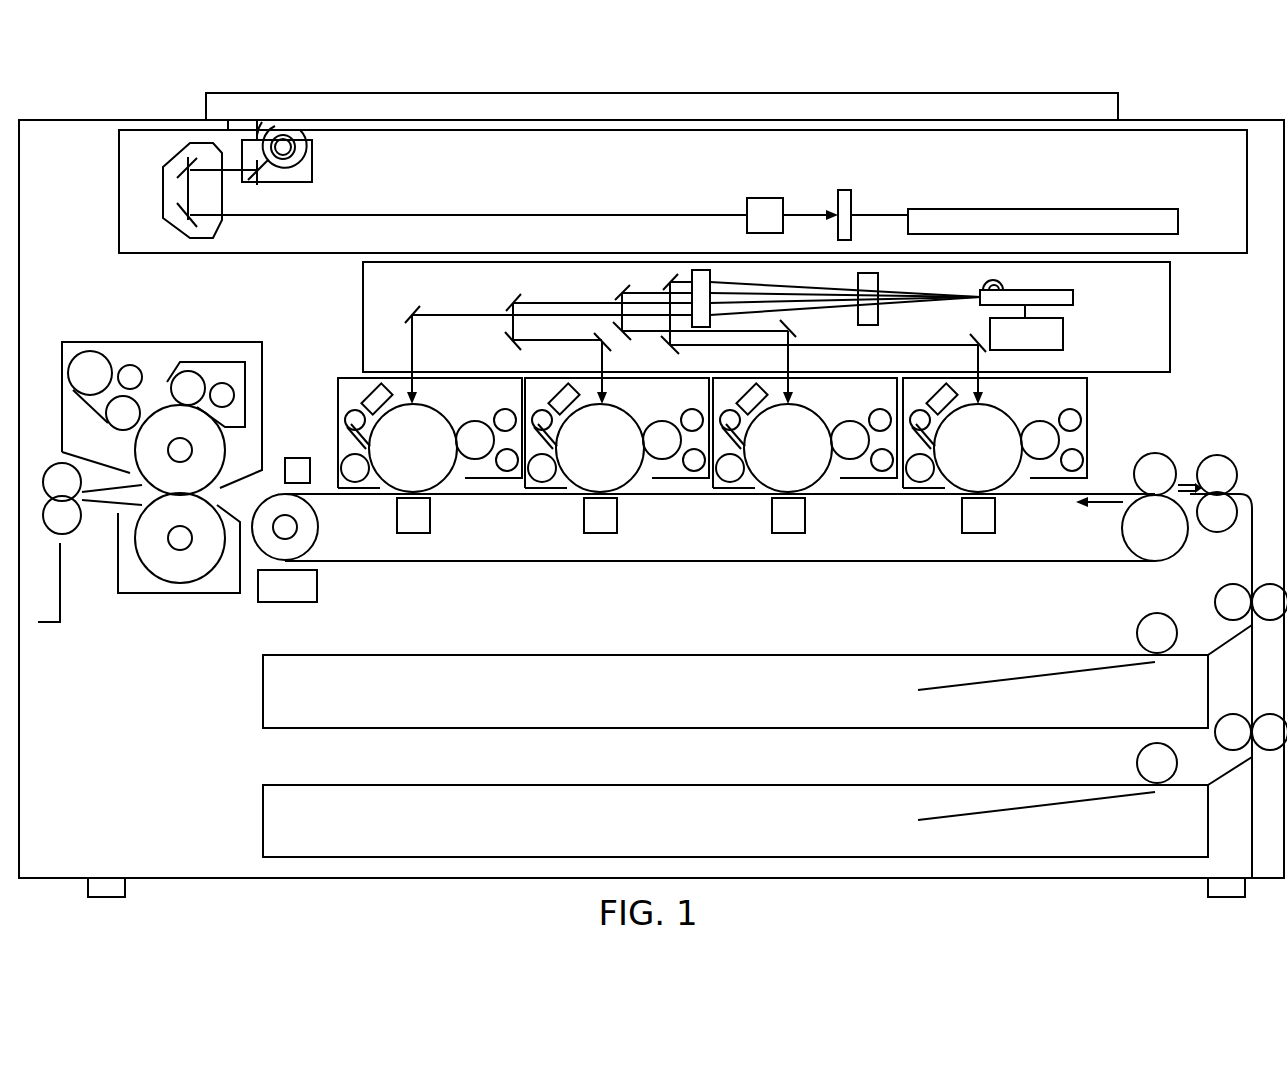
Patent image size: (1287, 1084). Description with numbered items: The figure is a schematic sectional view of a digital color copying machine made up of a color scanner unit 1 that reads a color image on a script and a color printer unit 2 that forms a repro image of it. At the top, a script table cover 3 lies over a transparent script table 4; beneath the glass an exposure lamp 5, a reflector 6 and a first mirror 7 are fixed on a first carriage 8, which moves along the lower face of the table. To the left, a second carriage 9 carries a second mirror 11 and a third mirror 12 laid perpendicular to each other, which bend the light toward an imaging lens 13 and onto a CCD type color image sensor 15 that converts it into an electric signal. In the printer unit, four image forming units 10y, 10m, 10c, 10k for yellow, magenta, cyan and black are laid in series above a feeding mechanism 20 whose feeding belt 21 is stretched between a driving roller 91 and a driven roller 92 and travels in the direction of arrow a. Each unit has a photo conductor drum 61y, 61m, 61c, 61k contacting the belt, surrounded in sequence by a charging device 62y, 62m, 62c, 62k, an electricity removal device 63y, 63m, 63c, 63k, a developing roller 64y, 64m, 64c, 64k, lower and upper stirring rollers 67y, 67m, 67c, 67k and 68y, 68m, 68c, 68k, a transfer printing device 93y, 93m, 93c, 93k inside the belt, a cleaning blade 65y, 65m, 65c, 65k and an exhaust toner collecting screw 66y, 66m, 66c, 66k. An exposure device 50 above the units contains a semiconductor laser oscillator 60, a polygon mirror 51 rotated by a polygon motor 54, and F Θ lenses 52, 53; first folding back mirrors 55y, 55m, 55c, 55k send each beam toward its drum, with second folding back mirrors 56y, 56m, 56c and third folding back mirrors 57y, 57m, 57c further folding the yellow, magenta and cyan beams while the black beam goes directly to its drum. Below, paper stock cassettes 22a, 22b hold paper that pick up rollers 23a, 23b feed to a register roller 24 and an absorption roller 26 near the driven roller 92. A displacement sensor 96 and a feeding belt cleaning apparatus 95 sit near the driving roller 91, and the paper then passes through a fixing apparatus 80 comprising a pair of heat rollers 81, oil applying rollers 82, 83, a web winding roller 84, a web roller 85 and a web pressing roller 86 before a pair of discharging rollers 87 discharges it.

The color scanner unit 1 is at (1083, 160).
The color printer unit 2 is at (352, 325).
The script table cover 3 is at (592, 108).
The script table 4 is at (550, 130).
The exposure lamp 5 is at (300, 142).
The reflector 6 is at (298, 168).
The first mirror 7 is at (262, 182).
The first carriage 8 is at (313, 160).
The second carriage 9 is at (222, 222).
The second mirror 11 is at (180, 165).
The third mirror 12 is at (177, 222).
The imaging lens 13 is at (770, 196).
The CCD type color image sensor 15 is at (845, 190).
The image forming unit 10k is at (458, 476).
The image forming unit 10c is at (645, 476).
The image forming unit 10m is at (833, 476).
The image forming unit 10y is at (1023, 476).
The feeding mechanism 20 is at (1095, 562).
The feeding belt 21 is at (1113, 492).
The paper stock cassette 22a is at (263, 690).
The paper stock cassette 22b is at (263, 815).
The pick up roller 23a is at (1140, 633).
The pick up roller 23b is at (1140, 763).
The register roller 24 is at (1215, 456).
The absorption roller 26 is at (1155, 455).
The exposure device 50 is at (1172, 314).
The polygon mirror 51 is at (1075, 297).
The F Θ lens 52 is at (880, 278).
The F Θ lens 53 is at (712, 272).
The polygon motor 54 is at (1065, 335).
The first folding back mirror 55k is at (410, 312).
The first folding back mirror 55c is at (508, 300).
The first folding back mirror 55m is at (616, 292).
The first folding back mirror 55y is at (666, 282).
The second folding back mirror 56c is at (507, 338).
The second folding back mirror 56m is at (615, 327).
The second folding back mirror 56y is at (666, 346).
The third folding back mirror 57c is at (595, 340).
The third folding back mirror 57m is at (795, 328).
The third folding back mirror 57y is at (975, 340).
The semiconductor laser oscillator 60 is at (1005, 283).
The photo conductor drum 61k is at (449, 415).
The photo conductor drum 61c is at (636, 415).
The photo conductor drum 61m is at (824, 415).
The photo conductor drum 61y is at (1014, 415).
The charging device 62k is at (365, 390).
The charging device 62c is at (570, 385).
The charging device 62m is at (758, 385).
The charging device 62y is at (948, 385).
The electricity removal device 63k is at (345, 418).
The electricity removal device 63c is at (542, 408).
The electricity removal device 63m is at (730, 408).
The electricity removal device 63y is at (920, 408).
The developing roller 64k is at (477, 460).
The developing roller 64c is at (664, 460).
The developing roller 64m is at (852, 460).
The developing roller 64y is at (1042, 460).
The cleaning blade 65k is at (345, 437).
The cleaning blade 65c is at (545, 452).
The cleaning blade 65m is at (733, 452).
The cleaning blade 65y is at (923, 452).
The exhaust toner collecting screw 66k is at (345, 465).
The exhaust toner collecting screw 66c is at (550, 478).
The exhaust toner collecting screw 66m is at (738, 478).
The exhaust toner collecting screw 66y is at (928, 478).
The lower stirring roller 67k is at (507, 472).
The lower stirring roller 67c is at (694, 472).
The lower stirring roller 67m is at (882, 472).
The lower stirring roller 67y is at (1072, 472).
The upper stirring roller 68k is at (503, 409).
The upper stirring roller 68c is at (690, 409).
The upper stirring roller 68m is at (878, 409).
The upper stirring roller 68y is at (1068, 409).
The fixing apparatus 80 is at (272, 383).
The pair of heat rollers 81 is at (180, 583).
The oil applying roller 82 is at (222, 383).
The oil applying roller 83 is at (190, 374).
The web winding roller 84 is at (128, 372).
The web roller 85 is at (92, 358).
The web pressing roller 86 is at (112, 420).
The pair of discharging rollers 87 is at (74, 530).
The driving roller 91 is at (305, 548).
The driven roller 92 is at (1175, 540).
The transfer printing device 93k is at (413, 533).
The transfer printing device 93c is at (600, 533).
The transfer printing device 93m is at (788, 533).
The transfer printing device 93y is at (978, 533).
The feeding belt cleaning apparatus 95 is at (290, 600).
The displacement sensor 96 is at (305, 483).
The arrow A a is at (1099, 510).